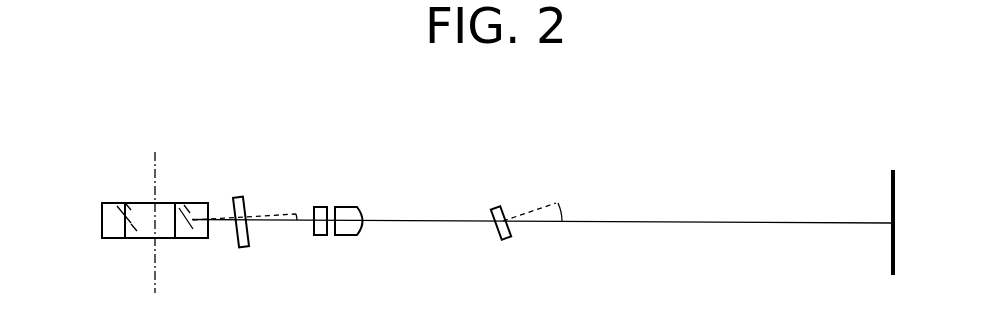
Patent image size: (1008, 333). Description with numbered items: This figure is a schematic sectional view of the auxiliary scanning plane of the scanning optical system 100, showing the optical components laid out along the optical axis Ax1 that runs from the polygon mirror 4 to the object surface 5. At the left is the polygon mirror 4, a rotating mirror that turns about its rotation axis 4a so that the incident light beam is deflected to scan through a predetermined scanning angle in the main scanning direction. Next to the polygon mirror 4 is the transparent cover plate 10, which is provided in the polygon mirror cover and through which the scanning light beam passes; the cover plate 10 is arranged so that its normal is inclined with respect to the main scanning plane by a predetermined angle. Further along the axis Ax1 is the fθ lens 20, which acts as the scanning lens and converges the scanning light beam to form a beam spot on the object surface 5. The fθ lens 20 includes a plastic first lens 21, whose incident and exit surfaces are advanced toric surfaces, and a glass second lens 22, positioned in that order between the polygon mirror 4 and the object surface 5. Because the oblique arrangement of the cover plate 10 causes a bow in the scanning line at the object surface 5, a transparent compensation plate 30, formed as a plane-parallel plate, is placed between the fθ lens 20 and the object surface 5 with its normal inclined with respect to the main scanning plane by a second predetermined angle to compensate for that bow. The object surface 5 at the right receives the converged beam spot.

The scanning optical system 100 is at (583, 139).
The polygon mirror 4 is at (185, 238).
The rotation axis 4a is at (157, 180).
The cover plate 10 is at (242, 249).
The fθ lens 20 is at (348, 264).
The first lens 21 is at (321, 236).
The second lens 22 is at (353, 228).
The compensation plate 30 is at (503, 240).
The object surface 5 is at (890, 253).
The optical axis Ax1 is at (715, 224).